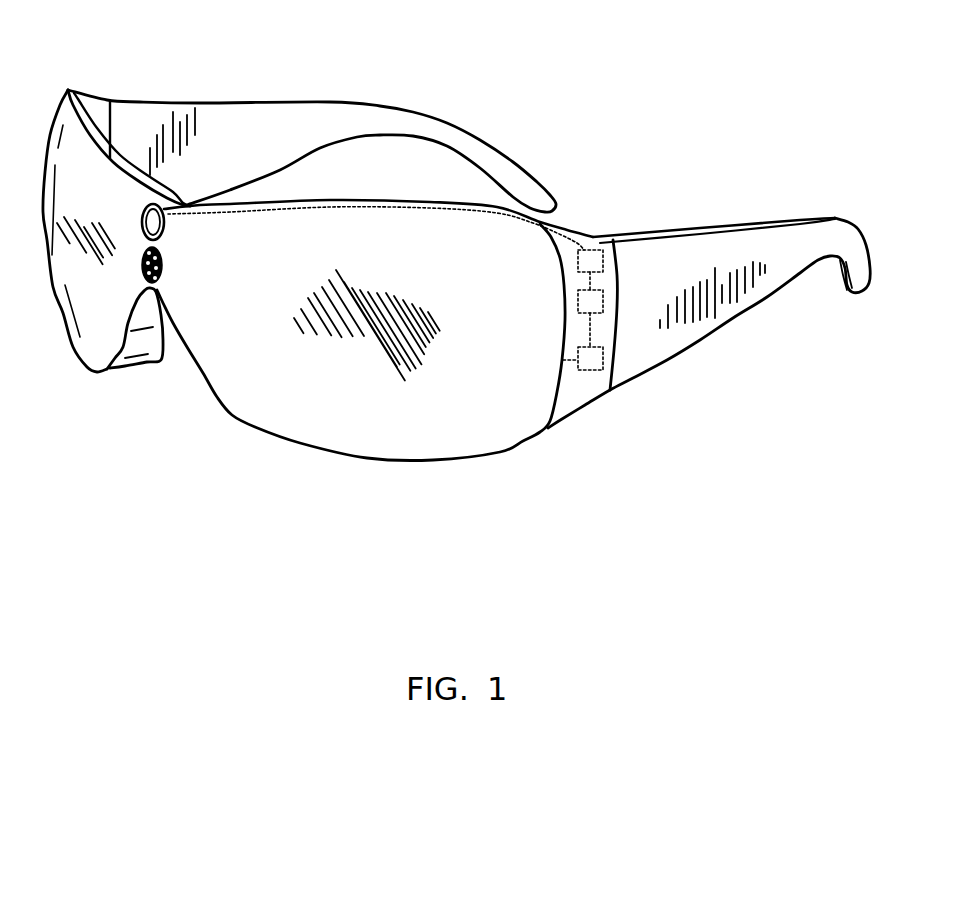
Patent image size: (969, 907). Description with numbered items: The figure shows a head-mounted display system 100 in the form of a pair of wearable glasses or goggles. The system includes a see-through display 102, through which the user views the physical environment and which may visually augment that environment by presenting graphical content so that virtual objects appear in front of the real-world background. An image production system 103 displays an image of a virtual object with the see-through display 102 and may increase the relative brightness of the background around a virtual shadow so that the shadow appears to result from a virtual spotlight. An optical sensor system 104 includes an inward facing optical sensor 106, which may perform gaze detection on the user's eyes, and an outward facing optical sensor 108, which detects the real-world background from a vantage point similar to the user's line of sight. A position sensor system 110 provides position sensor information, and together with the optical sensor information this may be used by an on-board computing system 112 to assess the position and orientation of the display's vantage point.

The head-mounted display system 100 is at (527, 83).
The see-through display 102 is at (331, 367).
The image production system 103 is at (590, 360).
The optical sensor system 104 is at (193, 182).
The inward facing optical sensor 106 is at (157, 218).
The outward facing optical sensor 108 is at (162, 362).
The position sensor system 110 is at (597, 300).
The on-board computing system 112 is at (590, 257).